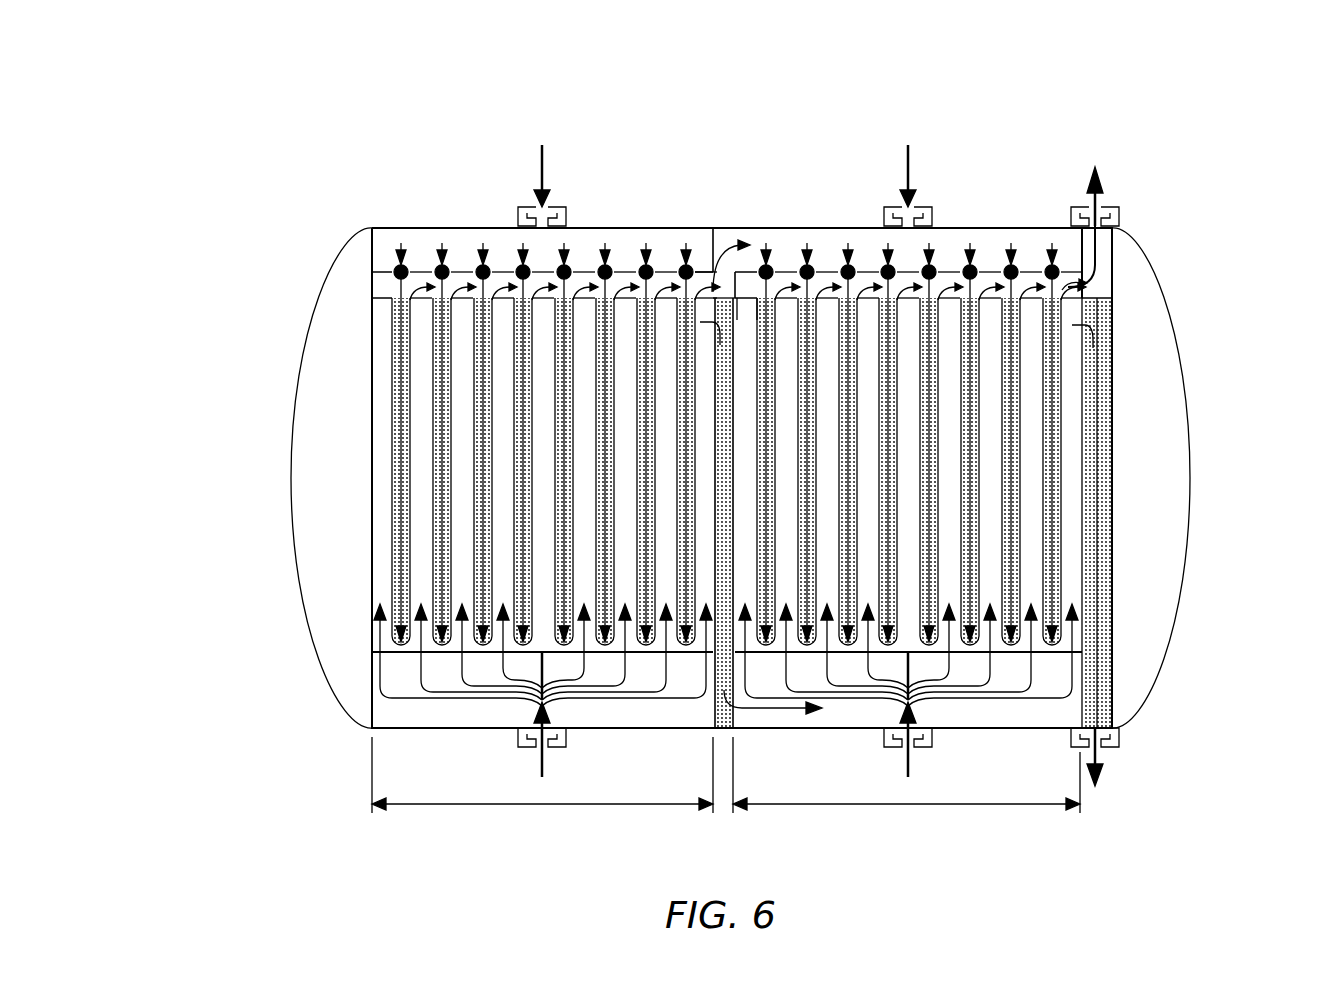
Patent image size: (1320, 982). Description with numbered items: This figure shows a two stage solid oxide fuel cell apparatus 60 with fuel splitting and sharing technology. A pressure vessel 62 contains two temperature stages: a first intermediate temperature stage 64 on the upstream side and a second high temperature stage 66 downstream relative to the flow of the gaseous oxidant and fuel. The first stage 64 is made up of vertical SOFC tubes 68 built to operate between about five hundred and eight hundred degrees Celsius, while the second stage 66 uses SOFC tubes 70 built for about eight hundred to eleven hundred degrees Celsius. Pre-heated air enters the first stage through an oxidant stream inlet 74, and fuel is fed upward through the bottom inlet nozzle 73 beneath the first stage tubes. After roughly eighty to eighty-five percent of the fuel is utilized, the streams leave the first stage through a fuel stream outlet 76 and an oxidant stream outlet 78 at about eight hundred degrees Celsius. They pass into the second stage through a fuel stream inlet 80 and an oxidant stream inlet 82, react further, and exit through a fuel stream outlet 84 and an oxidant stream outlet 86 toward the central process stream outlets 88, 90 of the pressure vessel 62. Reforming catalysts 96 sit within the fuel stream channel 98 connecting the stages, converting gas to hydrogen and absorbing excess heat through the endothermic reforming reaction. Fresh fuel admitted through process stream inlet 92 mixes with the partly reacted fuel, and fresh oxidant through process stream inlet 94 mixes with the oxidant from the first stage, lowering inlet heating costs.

The two stage fuel cell apparatus 60 is at (1168, 90).
The pressure vessel 62 is at (1160, 285).
The first intermediate temperature stage 64 is at (535, 805).
The second high temperature stage 66 is at (950, 805).
The SOFC tubes 68 is at (385, 412).
The SOFC tubes 70 is at (980, 490).
The first inlet nozzle 73 is at (525, 748).
The oxidant stream inlet 74 is at (520, 208).
The fuel stream outlet 76 is at (715, 322).
The oxidant stream outlet 78 is at (716, 290).
The fuel stream inlet 80 is at (743, 702).
The oxidant stream inlet 82 is at (722, 250).
The fuel stream outlet 84 is at (1096, 322).
The oxidant stream outlet 86 is at (1082, 275).
The central process stream outlet 88 is at (1120, 210).
The central process stream outlet 90 is at (1120, 748).
The process stream inlet 92 is at (930, 748).
The process stream inlet 94 is at (922, 205).
The reforming catalysts 96 is at (737, 298).
The fuel stream channel 98 is at (713, 735).